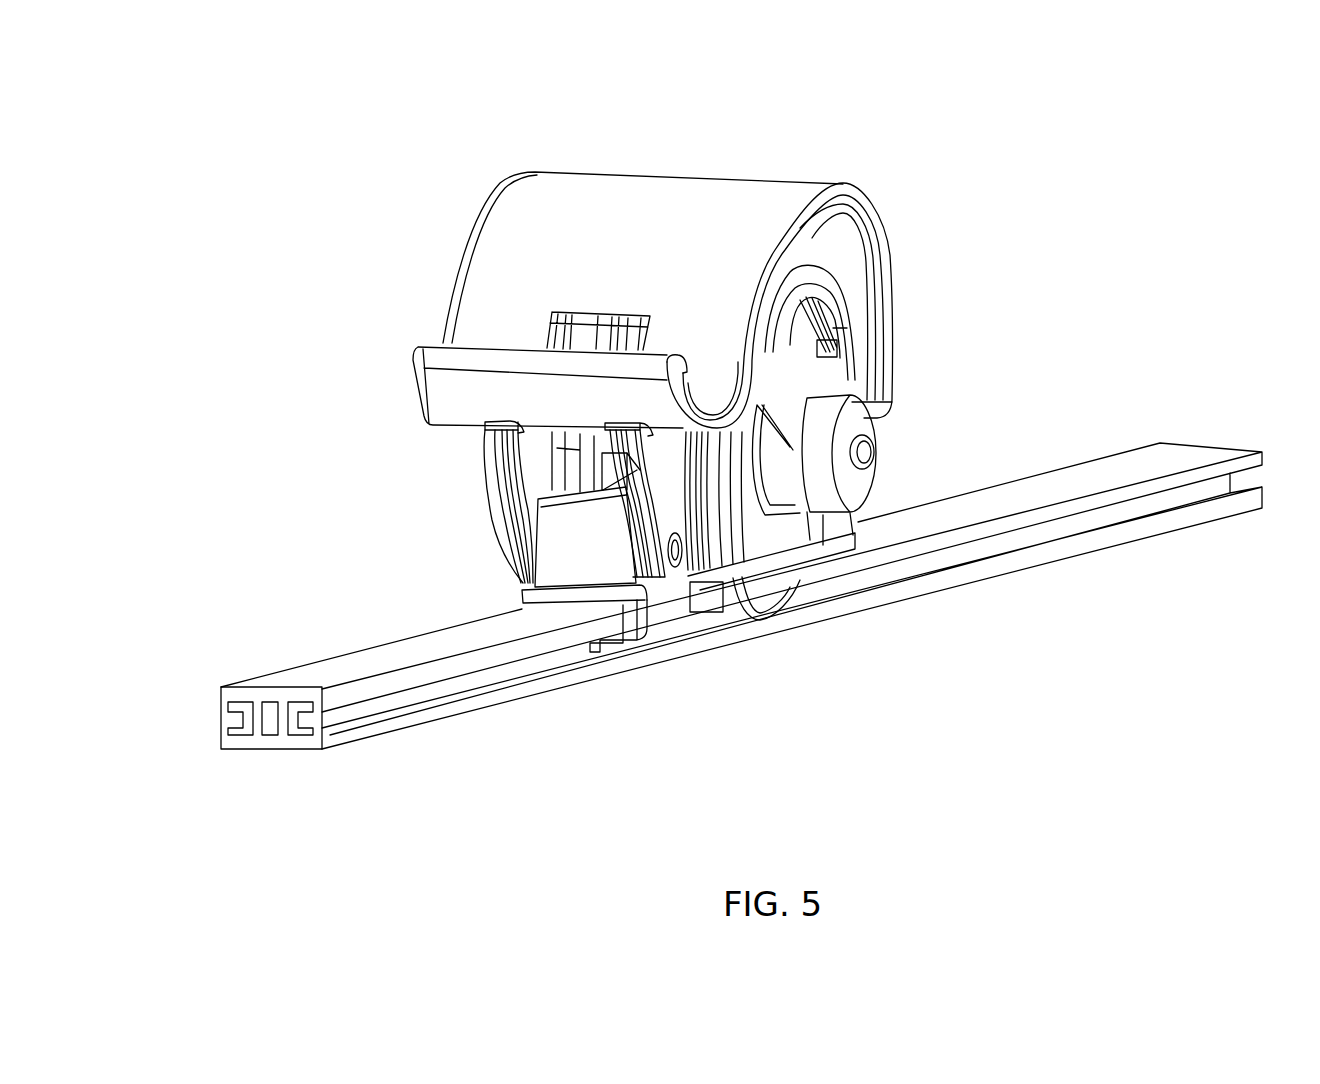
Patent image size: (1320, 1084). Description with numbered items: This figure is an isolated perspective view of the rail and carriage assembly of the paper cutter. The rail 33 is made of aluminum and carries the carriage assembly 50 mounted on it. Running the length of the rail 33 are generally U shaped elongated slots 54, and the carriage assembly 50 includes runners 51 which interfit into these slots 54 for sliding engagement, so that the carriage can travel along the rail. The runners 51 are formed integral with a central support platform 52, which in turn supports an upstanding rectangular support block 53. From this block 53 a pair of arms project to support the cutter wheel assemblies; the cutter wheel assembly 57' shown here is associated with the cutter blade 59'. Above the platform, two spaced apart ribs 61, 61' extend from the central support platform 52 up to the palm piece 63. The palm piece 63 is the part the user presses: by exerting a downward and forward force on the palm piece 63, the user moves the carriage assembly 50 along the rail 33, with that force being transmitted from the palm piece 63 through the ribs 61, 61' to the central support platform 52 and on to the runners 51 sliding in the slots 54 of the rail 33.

The rail 33 is at (1022, 495).
The carriage assembly 50 is at (743, 213).
The runners 51 is at (612, 638).
The central support platform 52 is at (573, 605).
The upstanding rectangular support block 53 is at (613, 551).
The U shaped elongated slots 54 is at (237, 718).
The cutter wheel assembly 57' is at (901, 439).
The cutter blade 59' is at (792, 473).
The rib 61 is at (453, 502).
The rib 61' is at (732, 595).
The palm piece 63 is at (600, 208).